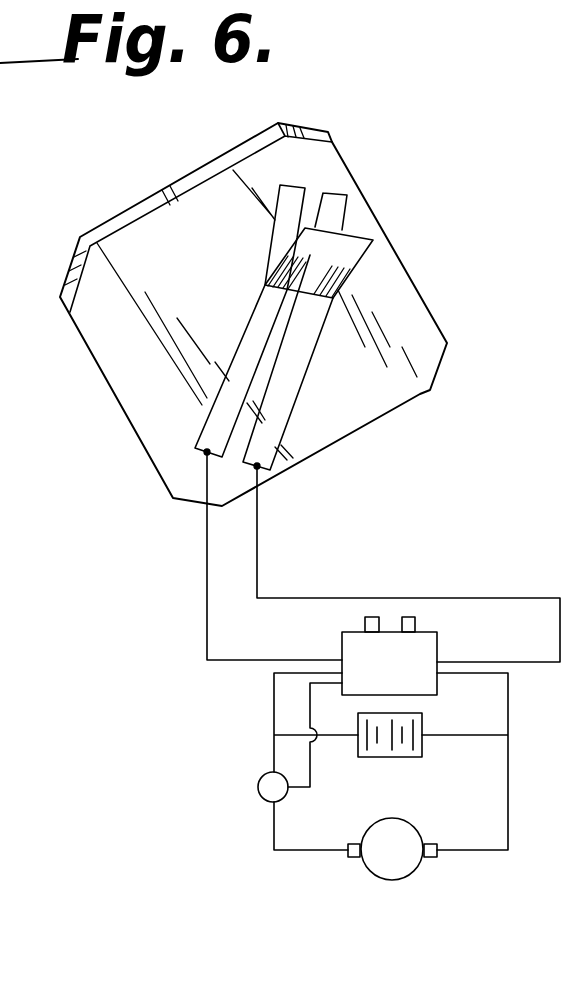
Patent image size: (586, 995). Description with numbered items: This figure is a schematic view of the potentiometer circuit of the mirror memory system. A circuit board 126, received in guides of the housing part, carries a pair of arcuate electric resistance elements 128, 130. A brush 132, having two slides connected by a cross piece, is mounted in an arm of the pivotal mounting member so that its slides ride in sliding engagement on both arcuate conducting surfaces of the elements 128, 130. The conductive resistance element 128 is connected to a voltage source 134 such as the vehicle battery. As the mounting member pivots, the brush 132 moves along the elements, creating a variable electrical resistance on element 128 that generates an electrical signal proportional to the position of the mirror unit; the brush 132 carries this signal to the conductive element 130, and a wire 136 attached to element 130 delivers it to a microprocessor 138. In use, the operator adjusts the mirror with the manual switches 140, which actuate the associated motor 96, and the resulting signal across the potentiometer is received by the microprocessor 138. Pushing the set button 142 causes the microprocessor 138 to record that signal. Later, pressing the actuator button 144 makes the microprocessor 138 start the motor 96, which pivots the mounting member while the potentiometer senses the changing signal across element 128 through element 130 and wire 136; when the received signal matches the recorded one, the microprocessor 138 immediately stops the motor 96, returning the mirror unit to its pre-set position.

The motor 96 is at (397, 863).
The circuit board 126 is at (403, 303).
The arcuate electric resistance element 128 is at (258, 307).
The arcuate electric resistance element 130 is at (328, 363).
The brush 132 is at (355, 252).
The voltage source 134 is at (390, 750).
The wire 136 is at (528, 598).
The microprocessor 138 is at (410, 681).
The manual switch 140 is at (262, 788).
The set button 142 is at (372, 617).
The actuator button 144 is at (403, 617).